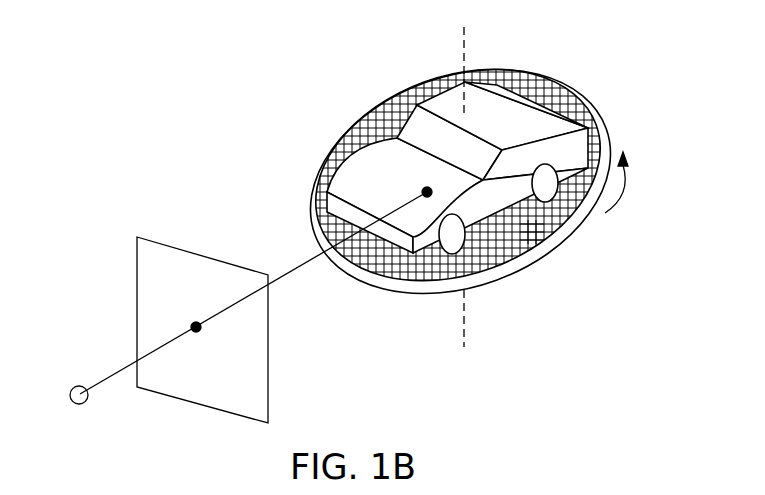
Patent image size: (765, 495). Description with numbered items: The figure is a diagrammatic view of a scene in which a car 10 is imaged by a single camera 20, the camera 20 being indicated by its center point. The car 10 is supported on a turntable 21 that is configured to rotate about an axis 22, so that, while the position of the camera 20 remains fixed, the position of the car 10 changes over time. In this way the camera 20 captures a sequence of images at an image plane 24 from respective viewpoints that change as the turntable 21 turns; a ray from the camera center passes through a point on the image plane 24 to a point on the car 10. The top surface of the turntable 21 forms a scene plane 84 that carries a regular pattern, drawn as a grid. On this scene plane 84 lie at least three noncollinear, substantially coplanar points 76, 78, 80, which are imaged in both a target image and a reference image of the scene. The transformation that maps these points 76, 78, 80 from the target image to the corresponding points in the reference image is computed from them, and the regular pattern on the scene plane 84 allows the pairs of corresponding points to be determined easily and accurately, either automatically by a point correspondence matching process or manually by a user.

The car 10 is at (560, 120).
The camera 20 is at (78, 385).
The turntable 21 is at (350, 127).
The axis 22 is at (463, 328).
The image plane 24 is at (137, 285).
The noncollinear point 76 is at (510, 253).
The noncollinear point 78 is at (513, 237).
The noncollinear point 80 is at (530, 233).
The scene plane 84 is at (535, 82).